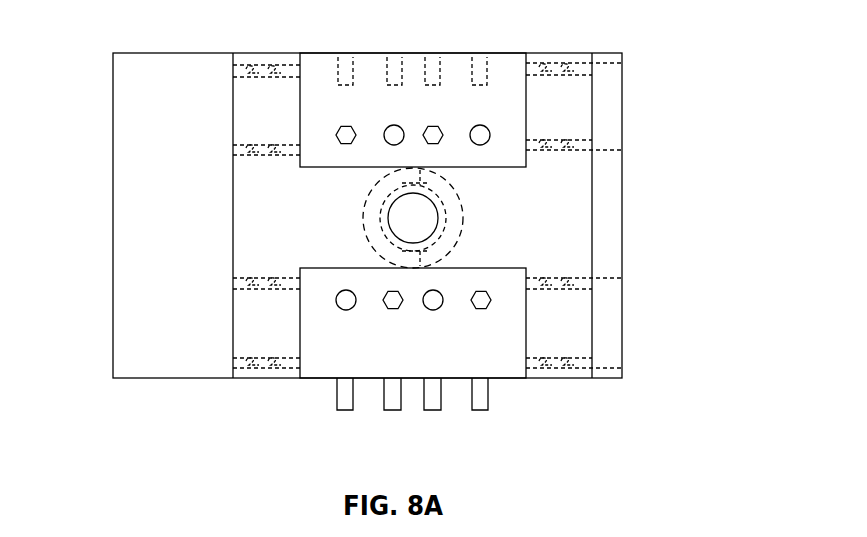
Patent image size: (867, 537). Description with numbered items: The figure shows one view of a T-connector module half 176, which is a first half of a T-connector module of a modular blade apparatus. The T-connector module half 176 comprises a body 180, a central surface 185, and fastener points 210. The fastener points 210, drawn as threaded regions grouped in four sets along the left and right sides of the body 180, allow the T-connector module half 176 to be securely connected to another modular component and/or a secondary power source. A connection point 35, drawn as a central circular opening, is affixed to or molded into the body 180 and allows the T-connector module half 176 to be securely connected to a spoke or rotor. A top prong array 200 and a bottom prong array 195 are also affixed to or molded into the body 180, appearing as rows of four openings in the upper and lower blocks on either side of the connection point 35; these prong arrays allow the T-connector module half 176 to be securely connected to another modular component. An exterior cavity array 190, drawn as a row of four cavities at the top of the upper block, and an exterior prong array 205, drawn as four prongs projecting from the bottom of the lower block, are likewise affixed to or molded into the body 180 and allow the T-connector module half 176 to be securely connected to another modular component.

The T-connector module half 176 is at (167, 30).
The body 180 is at (138, 75).
The central surface 185 is at (250, 220).
The exterior cavity array 190 is at (502, 53).
The top prong array 200 is at (502, 113).
The connection point 35 is at (432, 207).
The bottom prong array 195 is at (502, 313).
The exterior prong array 205 is at (502, 420).
The fastener points 210 is at (232, 63).